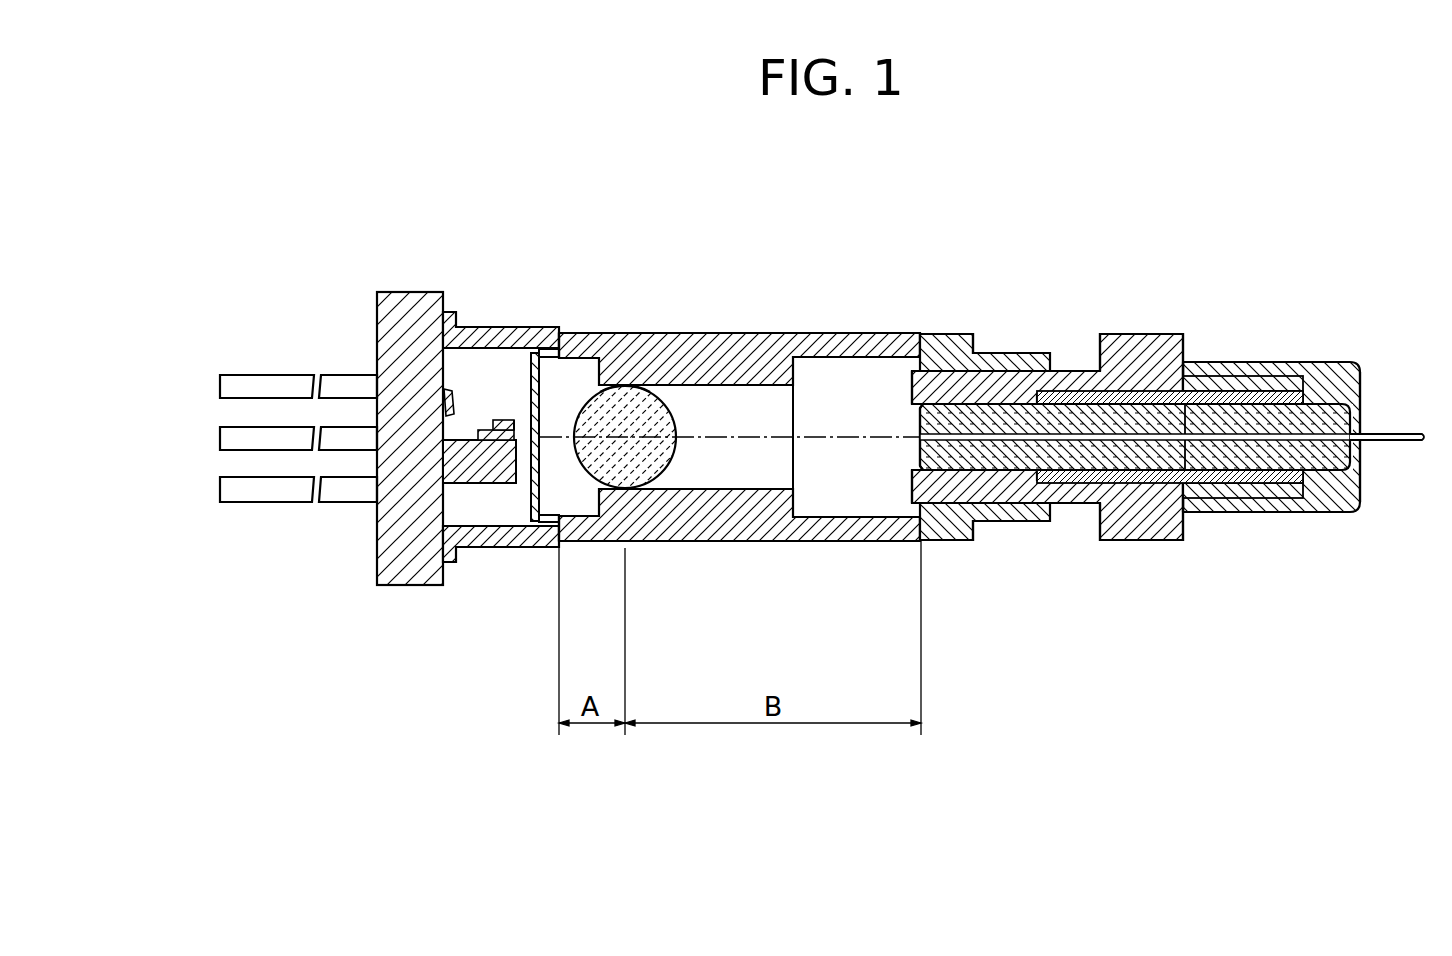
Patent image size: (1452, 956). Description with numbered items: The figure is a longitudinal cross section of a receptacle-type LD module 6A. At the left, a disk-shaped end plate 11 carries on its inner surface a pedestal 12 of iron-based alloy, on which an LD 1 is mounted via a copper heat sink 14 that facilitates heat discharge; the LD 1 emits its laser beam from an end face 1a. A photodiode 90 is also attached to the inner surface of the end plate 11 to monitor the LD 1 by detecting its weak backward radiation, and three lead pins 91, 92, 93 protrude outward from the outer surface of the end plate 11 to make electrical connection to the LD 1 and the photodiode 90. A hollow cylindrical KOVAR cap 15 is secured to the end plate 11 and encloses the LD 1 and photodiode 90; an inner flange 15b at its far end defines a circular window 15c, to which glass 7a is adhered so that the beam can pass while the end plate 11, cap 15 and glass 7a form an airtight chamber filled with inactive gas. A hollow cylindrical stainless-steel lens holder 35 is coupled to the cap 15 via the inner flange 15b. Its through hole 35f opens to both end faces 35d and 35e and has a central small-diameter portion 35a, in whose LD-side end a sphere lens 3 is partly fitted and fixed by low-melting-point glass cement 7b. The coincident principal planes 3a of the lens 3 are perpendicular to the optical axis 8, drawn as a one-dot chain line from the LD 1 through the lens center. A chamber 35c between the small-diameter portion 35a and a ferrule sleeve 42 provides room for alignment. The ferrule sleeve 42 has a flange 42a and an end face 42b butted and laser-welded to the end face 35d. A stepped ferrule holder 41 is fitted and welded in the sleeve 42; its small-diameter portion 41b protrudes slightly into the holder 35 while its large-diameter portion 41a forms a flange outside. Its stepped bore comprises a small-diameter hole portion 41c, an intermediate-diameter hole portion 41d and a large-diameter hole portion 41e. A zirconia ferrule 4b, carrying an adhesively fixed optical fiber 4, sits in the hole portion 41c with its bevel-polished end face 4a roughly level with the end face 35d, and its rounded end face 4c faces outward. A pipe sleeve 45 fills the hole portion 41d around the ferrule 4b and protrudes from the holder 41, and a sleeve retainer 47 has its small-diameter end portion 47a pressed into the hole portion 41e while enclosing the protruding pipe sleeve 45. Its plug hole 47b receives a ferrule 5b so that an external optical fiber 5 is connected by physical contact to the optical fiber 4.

The LD 1 is at (503, 420).
The end face 1a is at (514, 422).
The sphere lens 3 is at (655, 395).
The principal plane 3a is at (632, 388).
The optical fiber 4 is at (1022, 468).
The end face 4a is at (912, 436).
The ferrule 4b is at (1062, 481).
The end face 4c is at (1187, 404).
The optical fiber 5 is at (1337, 434).
The ferrule 5b is at (1277, 404).
The LD module 6A is at (767, 256).
The glass 7a is at (512, 530).
The cement 7b is at (590, 358).
The optical axis 8 is at (747, 437).
The end plate 11 is at (413, 292).
The pedestal 12 is at (465, 440).
The heat sink 14 is at (481, 430).
The cap 15 is at (536, 525).
The inner flange 15b is at (546, 523).
The window 15c is at (549, 490).
The lens holder 35 is at (690, 545).
The small-diameter portion 35a is at (700, 385).
The chamber 35c is at (830, 385).
The end face 35d is at (925, 340).
The end face 35e is at (550, 332).
The through hole 35f is at (832, 508).
The ferrule holder 41 is at (1088, 371).
The large-diameter portion 41a is at (1125, 334).
The small-diameter portion 41b is at (1020, 371).
The small-diameter hole portion 41c is at (985, 470).
The intermediate-diameter hole portion 41d is at (1107, 520).
The large-diameter hole portion 41e is at (1195, 498).
The ferrule sleeve 42 is at (1000, 353).
The flange 42a is at (955, 334).
The end face 42b is at (925, 545).
The pipe sleeve 45 is at (1265, 483).
The sleeve retainer 47 is at (1327, 490).
The small-diameter end portion 47a is at (1183, 364).
The plug hole 47b is at (1362, 465).
The photodiode 90 is at (455, 392).
The lead pin 91 is at (219, 386).
The lead pin 92 is at (219, 438).
The lead pin 93 is at (219, 488).